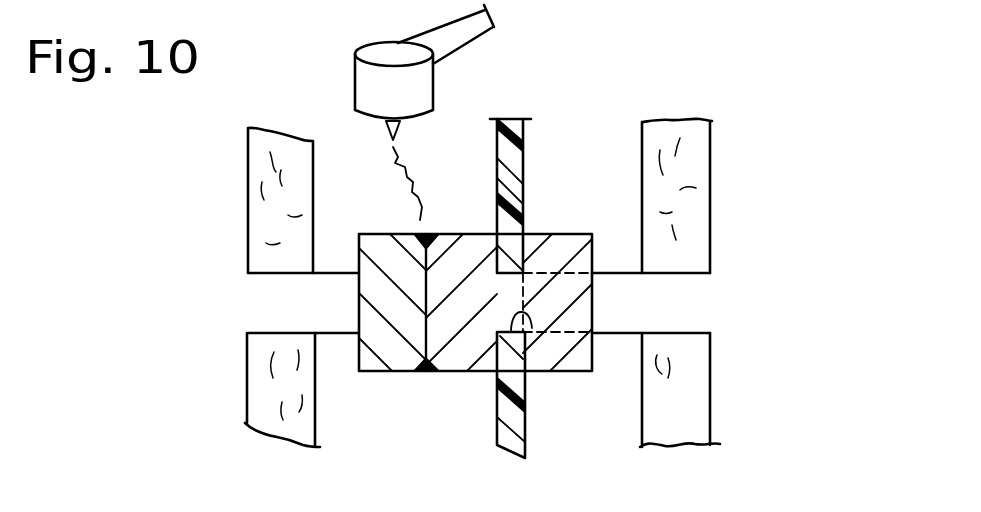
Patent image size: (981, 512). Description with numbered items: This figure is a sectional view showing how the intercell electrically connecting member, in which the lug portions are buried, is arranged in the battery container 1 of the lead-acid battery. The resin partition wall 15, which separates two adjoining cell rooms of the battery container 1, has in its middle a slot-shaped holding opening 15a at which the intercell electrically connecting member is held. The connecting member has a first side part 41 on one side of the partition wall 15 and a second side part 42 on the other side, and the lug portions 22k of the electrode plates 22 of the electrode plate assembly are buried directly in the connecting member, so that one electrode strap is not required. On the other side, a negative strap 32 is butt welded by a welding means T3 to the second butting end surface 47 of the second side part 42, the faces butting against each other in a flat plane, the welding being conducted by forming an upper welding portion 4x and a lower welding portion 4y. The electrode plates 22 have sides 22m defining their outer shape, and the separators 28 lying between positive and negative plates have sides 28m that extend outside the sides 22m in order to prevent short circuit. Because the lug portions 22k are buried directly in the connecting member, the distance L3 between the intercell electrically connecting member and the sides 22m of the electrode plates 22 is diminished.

The battery container 1 is at (497, 426).
The upper welding portion 4x is at (427, 233).
The lower welding portion 4y is at (425, 373).
The partition wall 15 is at (513, 425).
The holding opening 15a is at (531, 324).
The electrode plate 22 is at (253, 294).
The lug portion 22k is at (310, 292).
The side of electrode plate 22m is at (712, 376).
The separator 28 is at (278, 168).
The side of separator 28m is at (315, 158).
The negative strap 32 is at (387, 345).
The first side part 41 is at (567, 233).
The second side part 42 is at (461, 262).
The second butting end surface 47 is at (426, 296).
The welding means T3 is at (455, 35).
The distance L3 is at (593, 378).